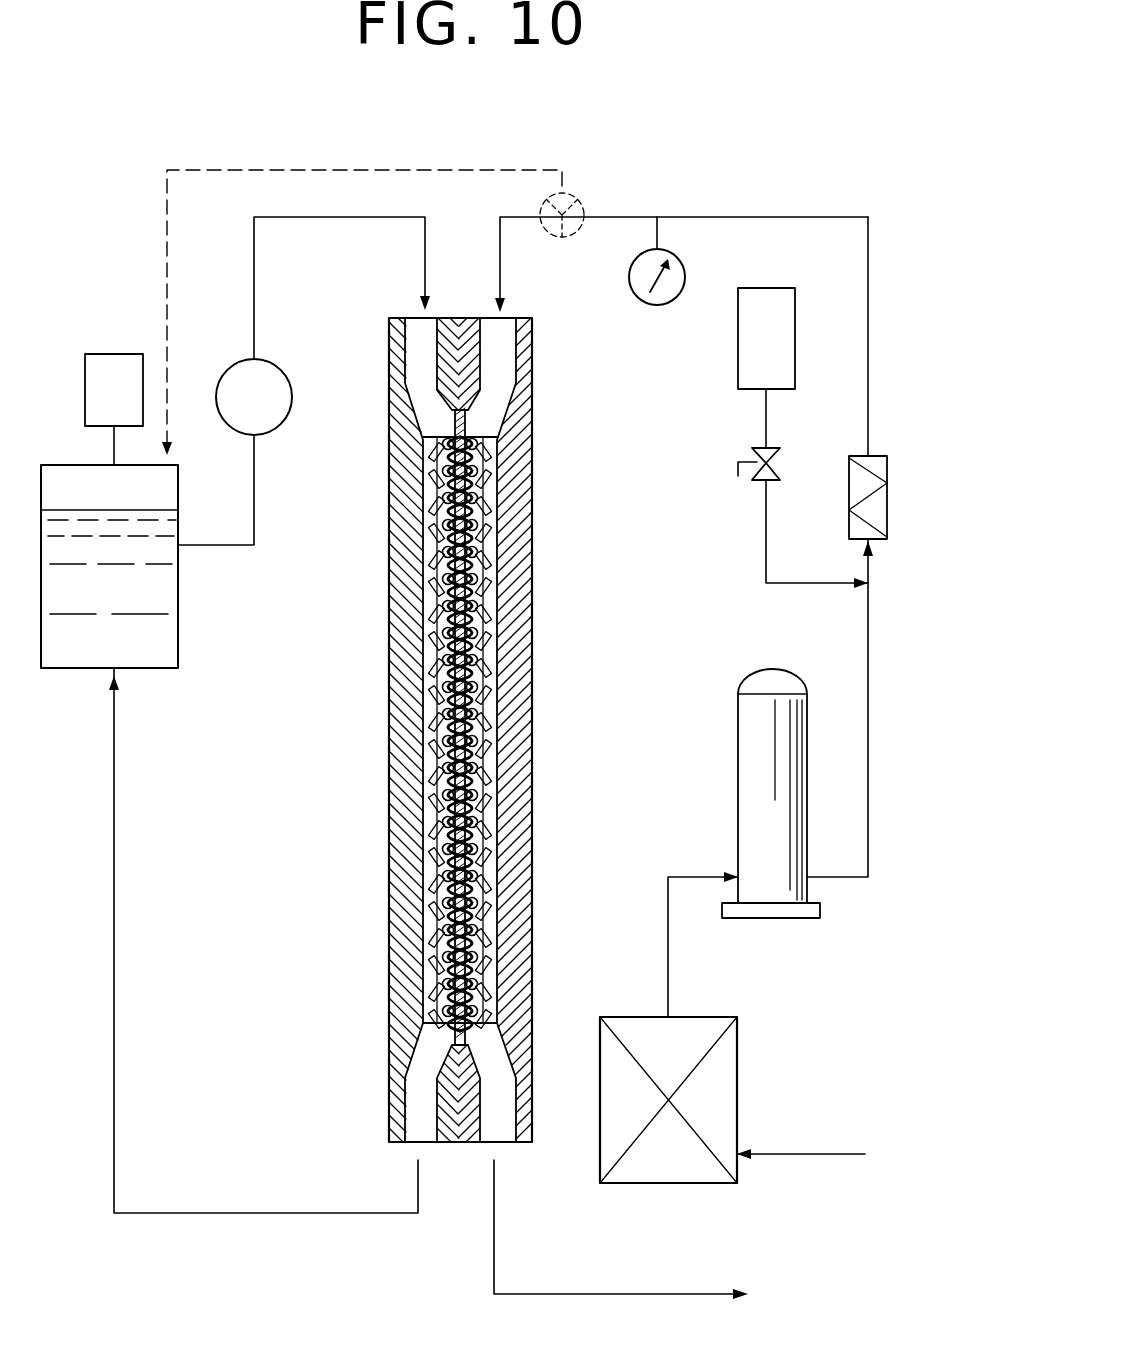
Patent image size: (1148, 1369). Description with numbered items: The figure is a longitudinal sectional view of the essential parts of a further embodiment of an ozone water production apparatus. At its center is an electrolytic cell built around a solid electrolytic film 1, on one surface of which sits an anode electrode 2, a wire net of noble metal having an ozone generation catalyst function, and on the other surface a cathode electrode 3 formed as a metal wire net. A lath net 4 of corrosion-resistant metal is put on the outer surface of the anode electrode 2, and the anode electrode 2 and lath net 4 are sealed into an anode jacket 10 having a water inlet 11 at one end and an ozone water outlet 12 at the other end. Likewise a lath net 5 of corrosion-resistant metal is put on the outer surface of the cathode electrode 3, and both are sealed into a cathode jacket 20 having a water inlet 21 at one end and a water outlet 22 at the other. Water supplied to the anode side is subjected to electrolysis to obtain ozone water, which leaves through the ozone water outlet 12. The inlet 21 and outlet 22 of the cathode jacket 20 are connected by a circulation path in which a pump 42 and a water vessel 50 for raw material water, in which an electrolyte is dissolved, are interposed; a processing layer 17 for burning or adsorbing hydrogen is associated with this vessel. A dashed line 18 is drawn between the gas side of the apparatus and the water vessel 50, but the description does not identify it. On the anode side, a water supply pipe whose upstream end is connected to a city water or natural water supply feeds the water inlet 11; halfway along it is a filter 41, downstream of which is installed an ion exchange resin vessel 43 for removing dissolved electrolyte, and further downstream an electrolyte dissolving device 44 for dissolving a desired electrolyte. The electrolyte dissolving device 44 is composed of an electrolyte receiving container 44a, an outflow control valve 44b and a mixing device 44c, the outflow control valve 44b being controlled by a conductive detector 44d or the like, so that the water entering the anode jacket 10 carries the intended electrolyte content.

The solid electrolytic film 1 is at (462, 408).
The anode electrode 2 is at (475, 488).
The cathode electrode 3 is at (445, 580).
The lath net 4 is at (510, 880).
The lath net 5 is at (445, 765).
The jacket 10 is at (510, 625).
The water inlet 11 is at (500, 358).
The ozone water outlet 12 is at (498, 1145).
The processing layer 17 is at (100, 355).
The control signal line 18 is at (165, 222).
The jacket 20 is at (400, 662).
The water inlet 21 is at (420, 365).
The water outlet 22 is at (412, 1145).
The filter 41 is at (737, 1080).
The pump 42 is at (278, 425).
The ion exchange resin vessel 43 is at (738, 740).
The electrolyte dissolving device 44 is at (800, 258).
The electrolyte receiving container 44a is at (738, 345).
The outflow control valve 44b is at (752, 482).
The mixing device 44c is at (849, 468).
The conductive detector 44d is at (630, 281).
The water vessel 50 is at (170, 647).